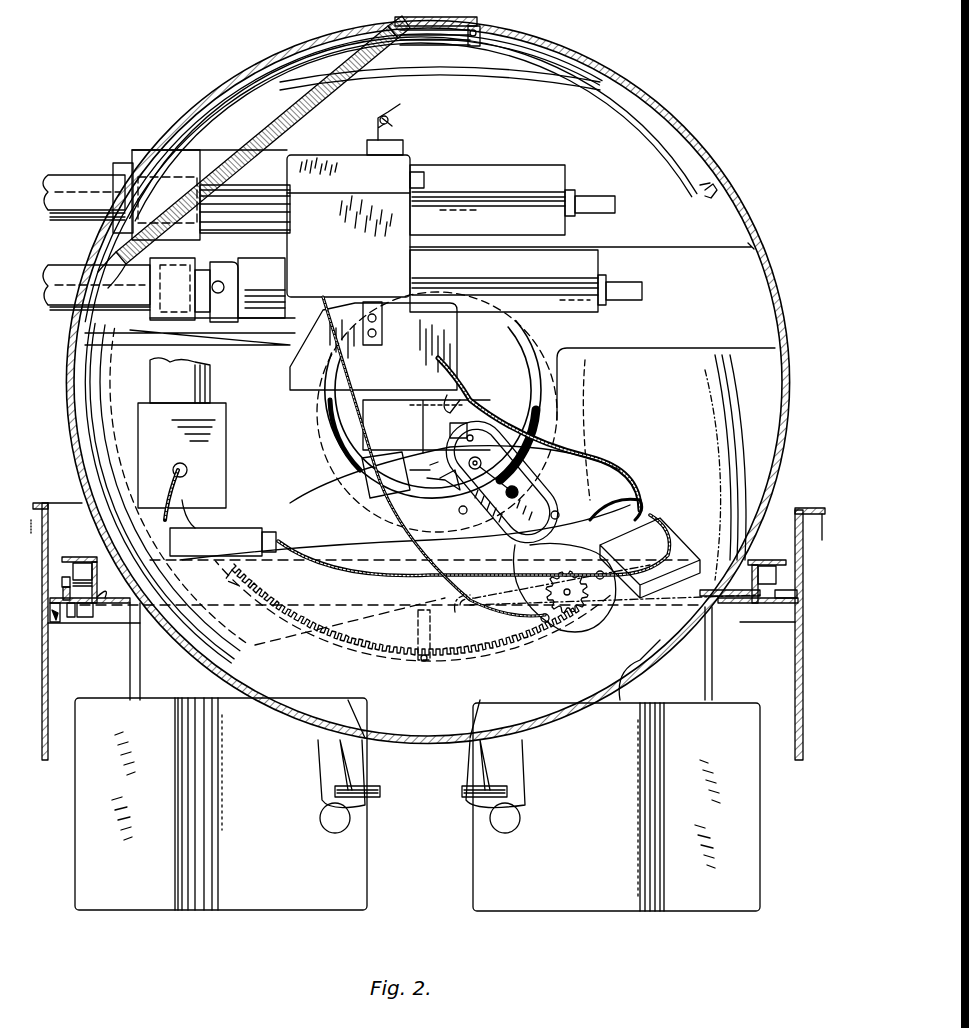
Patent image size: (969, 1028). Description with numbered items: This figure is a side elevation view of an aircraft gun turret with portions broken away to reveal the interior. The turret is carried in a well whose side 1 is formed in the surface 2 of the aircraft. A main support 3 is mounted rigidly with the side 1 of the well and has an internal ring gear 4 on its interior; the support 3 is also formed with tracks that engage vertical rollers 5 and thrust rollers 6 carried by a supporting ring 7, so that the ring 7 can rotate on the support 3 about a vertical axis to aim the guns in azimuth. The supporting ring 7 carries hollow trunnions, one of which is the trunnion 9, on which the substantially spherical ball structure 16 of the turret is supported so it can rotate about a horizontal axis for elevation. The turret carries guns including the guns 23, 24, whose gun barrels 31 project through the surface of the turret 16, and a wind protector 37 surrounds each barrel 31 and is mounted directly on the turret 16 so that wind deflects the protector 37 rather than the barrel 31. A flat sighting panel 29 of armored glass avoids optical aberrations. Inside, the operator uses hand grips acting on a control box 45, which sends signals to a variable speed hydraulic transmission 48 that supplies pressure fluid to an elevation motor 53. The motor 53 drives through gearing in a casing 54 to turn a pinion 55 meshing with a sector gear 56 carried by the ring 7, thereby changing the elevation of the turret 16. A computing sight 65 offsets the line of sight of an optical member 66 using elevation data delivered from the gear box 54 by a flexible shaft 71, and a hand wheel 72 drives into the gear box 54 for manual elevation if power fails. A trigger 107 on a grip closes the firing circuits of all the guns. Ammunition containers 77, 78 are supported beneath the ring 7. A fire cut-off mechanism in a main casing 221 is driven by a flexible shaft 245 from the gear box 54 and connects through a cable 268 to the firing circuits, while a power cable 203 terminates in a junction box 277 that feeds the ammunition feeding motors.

The side of the well 1 is at (58, 522).
The surface of the aircraft 2 is at (46, 503).
The main support 3 is at (62, 617).
The internal ring gear 4 is at (773, 620).
The vertical rollers 5 is at (78, 562).
The thrust rollers 6 is at (756, 620).
The supporting ring 7 is at (107, 590).
The hollow trunnion 9 is at (540, 380).
The ball structure of the turret 16 is at (655, 100).
The gun 23 is at (532, 172).
The gun 24 is at (600, 263).
The sighting panel 29 is at (245, 152).
The gun barrel 31 is at (48, 185).
The wind protector 37 is at (88, 180).
The control box 45 is at (390, 377).
The variable speed hydraulic transmission 48 is at (213, 425).
The elevation motor 53 is at (392, 460).
The casing 54 is at (540, 588).
The pinion 55 is at (565, 612).
The sector gear 56 is at (470, 650).
The computing sight 65 is at (348, 218).
The optical member 66 is at (382, 124).
The flexible shaft 71 is at (434, 582).
The hand wheel 72 is at (492, 512).
The ammunition container 77 is at (222, 900).
The ammunition container 78 is at (622, 905).
The trigger 107 is at (445, 405).
The power input cable 203 is at (583, 455).
The main casing 221 is at (242, 540).
The flexible shaft 245 is at (378, 570).
The cable 268 is at (392, 550).
The junction box 277 is at (660, 522).